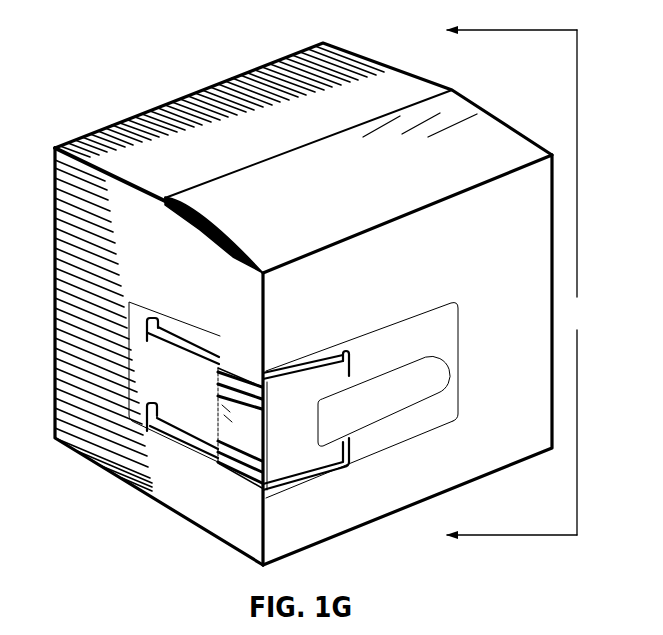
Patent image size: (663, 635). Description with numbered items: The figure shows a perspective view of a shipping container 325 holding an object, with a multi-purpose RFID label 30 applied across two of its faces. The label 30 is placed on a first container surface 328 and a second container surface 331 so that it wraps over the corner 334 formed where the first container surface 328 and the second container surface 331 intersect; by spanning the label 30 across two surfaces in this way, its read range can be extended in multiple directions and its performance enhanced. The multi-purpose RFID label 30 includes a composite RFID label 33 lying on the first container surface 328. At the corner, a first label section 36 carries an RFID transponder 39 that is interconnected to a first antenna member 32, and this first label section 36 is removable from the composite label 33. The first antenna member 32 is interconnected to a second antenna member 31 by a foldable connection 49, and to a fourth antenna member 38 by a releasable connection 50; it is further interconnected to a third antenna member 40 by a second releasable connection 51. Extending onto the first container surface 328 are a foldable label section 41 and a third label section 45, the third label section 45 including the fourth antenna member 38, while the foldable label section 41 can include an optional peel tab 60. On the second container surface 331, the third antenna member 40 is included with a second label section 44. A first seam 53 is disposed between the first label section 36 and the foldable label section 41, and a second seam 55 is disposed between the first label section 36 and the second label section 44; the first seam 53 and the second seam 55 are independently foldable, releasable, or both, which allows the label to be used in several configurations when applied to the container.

The multi-purpose RFID label 30 is at (314, 405).
The second antenna member 31 is at (293, 372).
The first antenna member 32 is at (239, 366).
The composite RFID label 33 is at (407, 305).
The first label section 36 is at (245, 388).
The fourth antenna member 38 is at (347, 353).
The RFID transponder 39 is at (222, 422).
The third antenna member 40 is at (159, 325).
The foldable label section 41 is at (295, 461).
The second label section 44 is at (135, 353).
The third label section 45 is at (434, 407).
The foldable connection 49 is at (268, 386).
The releasable connection 50 is at (320, 360).
The second releasable connection 51 is at (216, 348).
The first seam 53 is at (267, 433).
The second seam 55 is at (213, 408).
The peel tab 60 is at (424, 372).
The container 325 is at (523, 282).
The first container surface 328 is at (407, 360).
The second container surface 331 is at (159, 356).
The corner 334 is at (266, 297).